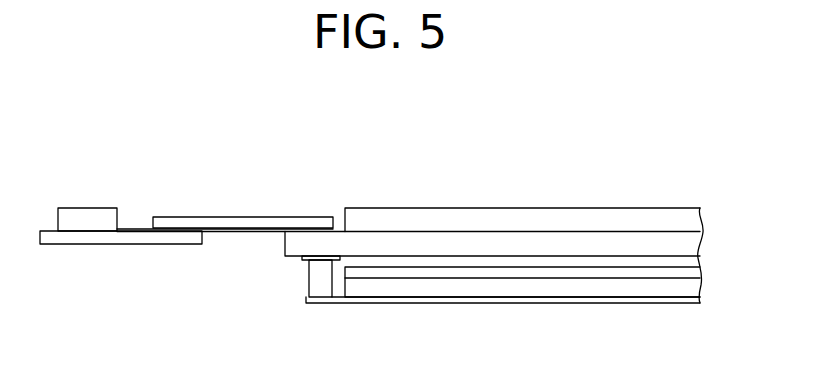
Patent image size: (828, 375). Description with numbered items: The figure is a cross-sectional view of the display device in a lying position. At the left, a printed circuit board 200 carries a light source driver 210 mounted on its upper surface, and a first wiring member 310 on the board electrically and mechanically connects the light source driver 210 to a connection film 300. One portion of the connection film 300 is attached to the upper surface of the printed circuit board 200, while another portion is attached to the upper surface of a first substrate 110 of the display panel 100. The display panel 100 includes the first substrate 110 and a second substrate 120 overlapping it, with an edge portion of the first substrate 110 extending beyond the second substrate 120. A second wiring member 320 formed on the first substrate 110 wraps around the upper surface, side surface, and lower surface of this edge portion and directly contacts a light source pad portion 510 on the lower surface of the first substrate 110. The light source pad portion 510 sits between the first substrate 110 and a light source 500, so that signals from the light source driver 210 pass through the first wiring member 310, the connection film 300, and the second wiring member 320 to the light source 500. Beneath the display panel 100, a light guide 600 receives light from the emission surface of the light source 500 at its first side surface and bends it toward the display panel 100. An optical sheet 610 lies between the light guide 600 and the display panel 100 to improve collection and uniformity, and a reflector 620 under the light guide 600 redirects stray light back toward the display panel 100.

The display panel 100 is at (595, 172).
The first substrate 110 is at (595, 245).
The second substrate 120 is at (540, 215).
The printed circuit board 200 is at (89, 237).
The light source driver 210 is at (86, 210).
The connection film 300 is at (237, 223).
The first wiring member 310 is at (141, 229).
The second wiring member 320 is at (284, 247).
The light source 500 is at (321, 284).
The light source pad portion 510 is at (313, 260).
The light guide 600 is at (502, 288).
The optical sheet 610 is at (582, 273).
The reflector 620 is at (442, 300).